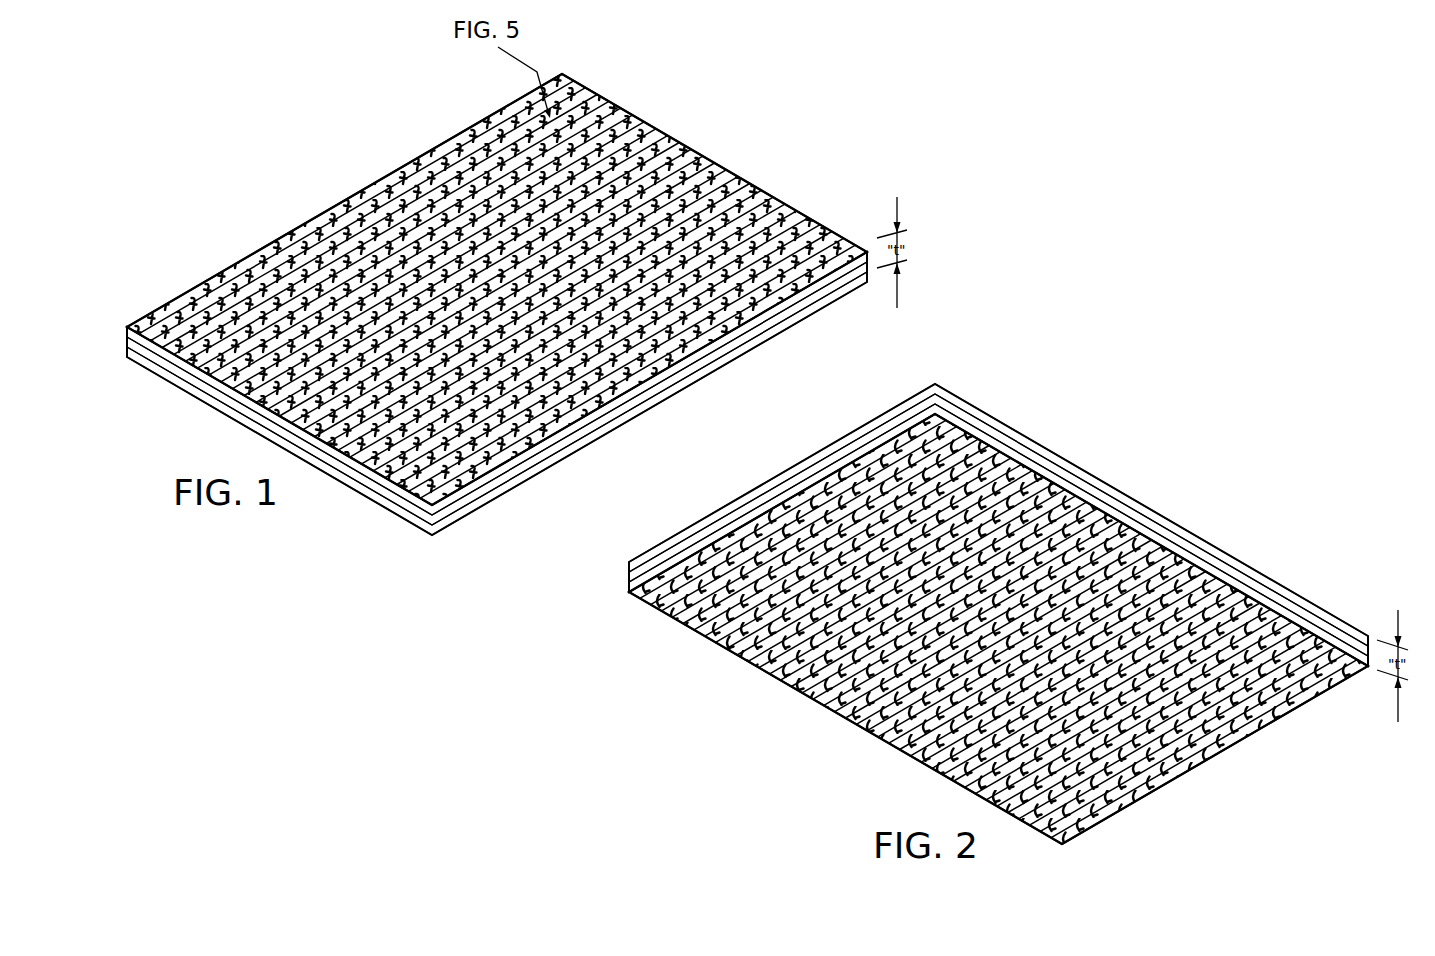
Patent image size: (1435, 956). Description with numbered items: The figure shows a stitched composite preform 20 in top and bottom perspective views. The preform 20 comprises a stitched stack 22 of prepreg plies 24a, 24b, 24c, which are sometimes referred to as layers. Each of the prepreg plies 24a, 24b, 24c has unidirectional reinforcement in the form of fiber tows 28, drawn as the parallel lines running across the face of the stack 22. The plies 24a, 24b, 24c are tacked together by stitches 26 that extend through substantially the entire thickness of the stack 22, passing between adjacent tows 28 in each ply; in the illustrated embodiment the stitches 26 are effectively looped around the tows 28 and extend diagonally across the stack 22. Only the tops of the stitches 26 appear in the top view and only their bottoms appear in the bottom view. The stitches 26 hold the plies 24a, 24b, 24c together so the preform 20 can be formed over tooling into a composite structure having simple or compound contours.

In FIG. 1, the composite preform 20 is at (283, 112).
In FIG. 2, the composite preform 20 is at (703, 768).
In FIG. 1, the stitched stack 22 is at (740, 112).
In FIG. 2, the stitched stack 22 is at (1232, 402).
In FIG. 1, the prepreg ply 24a is at (765, 322).
In FIG. 2, the prepreg ply 24a is at (1130, 502).
In FIG. 1, the prepreg ply 24b is at (720, 353).
In FIG. 2, the prepreg ply 24b is at (1193, 548).
In FIG. 1, the prepreg ply 24c is at (680, 387).
In FIG. 2, the prepreg ply 24c is at (1230, 580).
In FIG. 1, the stitches 26 is at (193, 297).
In FIG. 2, the stitches 26 is at (660, 612).
In FIG. 1, the fiber tows 28 is at (368, 207).
In FIG. 2, the fiber tows 28 is at (838, 700).